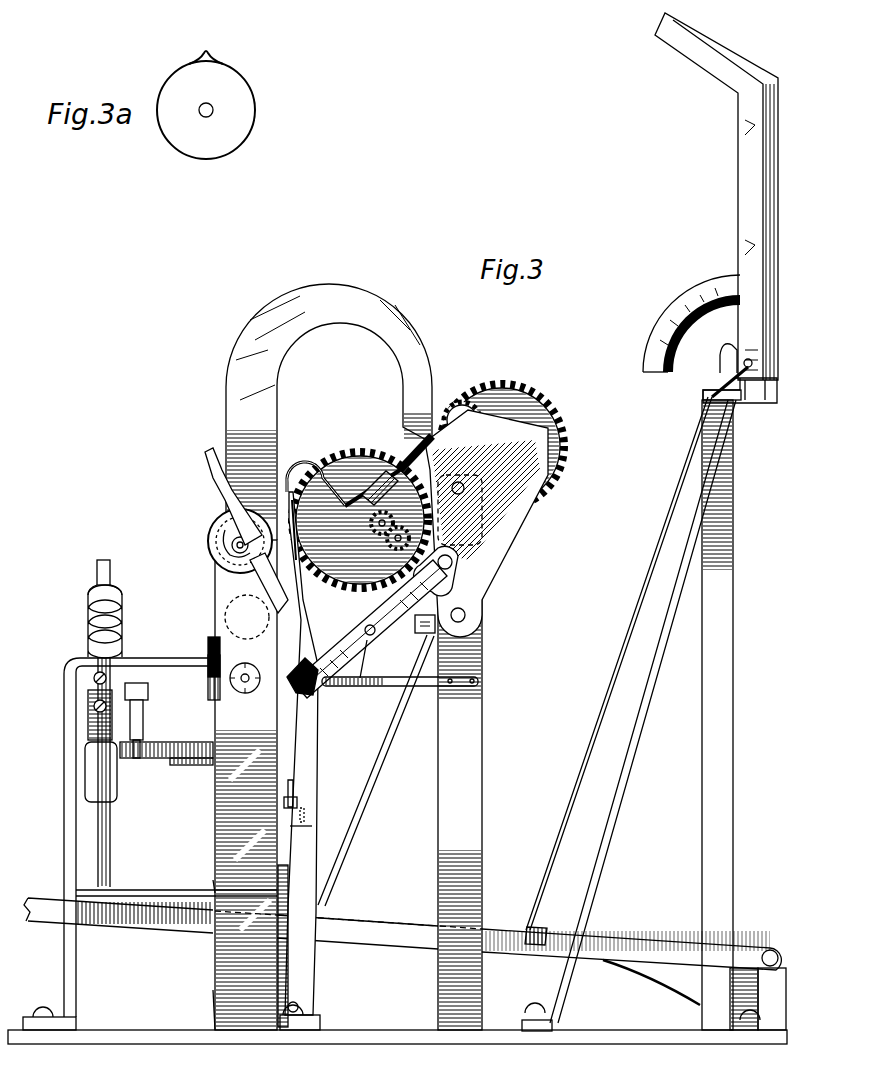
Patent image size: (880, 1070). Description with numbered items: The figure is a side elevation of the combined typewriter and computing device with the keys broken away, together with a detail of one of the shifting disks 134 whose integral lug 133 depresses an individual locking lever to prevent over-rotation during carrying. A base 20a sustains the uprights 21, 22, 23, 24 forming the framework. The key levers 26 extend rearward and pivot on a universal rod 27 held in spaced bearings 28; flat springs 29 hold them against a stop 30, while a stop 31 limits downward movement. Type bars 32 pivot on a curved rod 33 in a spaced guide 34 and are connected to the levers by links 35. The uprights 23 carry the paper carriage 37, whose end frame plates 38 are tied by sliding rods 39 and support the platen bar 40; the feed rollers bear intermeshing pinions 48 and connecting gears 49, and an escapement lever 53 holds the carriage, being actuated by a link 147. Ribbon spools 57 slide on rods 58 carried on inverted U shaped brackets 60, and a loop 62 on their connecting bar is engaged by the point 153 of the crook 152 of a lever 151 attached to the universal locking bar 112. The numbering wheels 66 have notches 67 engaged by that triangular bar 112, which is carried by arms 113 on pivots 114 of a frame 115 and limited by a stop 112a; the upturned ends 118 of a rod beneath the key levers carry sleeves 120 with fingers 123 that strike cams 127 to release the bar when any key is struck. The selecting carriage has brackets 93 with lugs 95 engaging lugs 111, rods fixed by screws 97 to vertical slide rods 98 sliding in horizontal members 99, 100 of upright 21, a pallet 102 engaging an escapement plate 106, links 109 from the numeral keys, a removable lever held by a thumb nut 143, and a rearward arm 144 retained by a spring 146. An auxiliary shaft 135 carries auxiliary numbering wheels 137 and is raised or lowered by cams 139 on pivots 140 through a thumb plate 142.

In FIG. 3A, the lug 133 is at (208, 52).
In FIG. 3A, the shifting disk 134 is at (181, 140).
In FIG. 3, the base 20a is at (150, 1030).
In FIG. 3, the upright 21 is at (64, 795).
In FIG. 3, the uprights 22 is at (230, 785).
In FIG. 3, the uprights 23 is at (470, 825).
In FIG. 3, the uprights 24 is at (706, 742).
In FIG. 3, the key levers 26 is at (390, 916).
In FIG. 3, the universal rod 27 is at (768, 950).
In FIG. 3, the bearings 28 is at (760, 995).
In FIG. 3, the flat springs 29 is at (665, 982).
In FIG. 3, the stop 30 is at (213, 880).
In FIG. 3, the stop 31 is at (197, 1000).
In FIG. 3, the type bars 32 is at (735, 75).
In FIG. 3, the rod 33 is at (744, 363).
In FIG. 3, the guide 34 is at (680, 295).
In FIG. 3, the links 35 is at (660, 582).
In FIG. 3, the paper carriage 37 is at (492, 518).
In FIG. 3, the end frame plates 38 is at (462, 578).
In FIG. 3, the rods 39 is at (460, 494).
In FIG. 3, the flat bar 40 is at (440, 490).
In FIG. 3, the intermeshing pinions 48 is at (470, 415).
In FIG. 3, the gears 49 is at (565, 432).
In FIG. 3, the escapement lever 53 is at (415, 632).
In FIG. 3, the spools 57 is at (392, 510).
In FIG. 3, the rods 58 is at (418, 446).
In FIG. 3, the inverted U shaped brackets 60 is at (333, 323).
In FIG. 3, the loop 62 is at (352, 522).
In FIG. 3, the numbering wheels 66 is at (212, 650).
In FIG. 3, the notches 67 is at (215, 690).
In FIG. 3, the brackets 93 is at (125, 752).
In FIG. 3, the lugs 95 is at (158, 758).
In FIG. 3, the screws 97 is at (90, 700).
In FIG. 3, the vertical slide rods 98 is at (97, 572).
In FIG. 3, the horizontal member 99 is at (170, 658).
In FIG. 3, the horizontal member 100 is at (165, 890).
In FIG. 3, the pallet 102 is at (143, 712).
In FIG. 3, the escapement plate 106 is at (140, 748).
In FIG. 3, the links 109 is at (95, 635).
In FIG. 3, the lugs 111 is at (190, 766).
In FIG. 3, the universal locking bar 112 is at (318, 690).
In FIG. 3, the stop 112a is at (382, 678).
In FIG. 3, the arms 113 is at (300, 770).
In FIG. 3, the pivots 114 is at (300, 1005).
In FIG. 3, the frame 115 is at (320, 990).
In FIG. 3, the vertical ends 118 is at (290, 782).
In FIG. 3, the sleeves 120 is at (312, 826).
In FIG. 3, the fingers 123 is at (300, 795).
In FIG. 3, the cams 127 is at (308, 812).
In FIG. 3, the auxiliary shaft 135 is at (230, 550).
In FIG. 3, the auxiliary numbering wheels 137 is at (212, 530).
In FIG. 3, the cams 139 is at (215, 540).
In FIG. 3, the pivots 140 is at (292, 505).
In FIG. 3, the thumb plate 142 is at (208, 455).
In FIG. 3, the thumb nut 143 is at (150, 682).
In FIG. 3, the arm 144 is at (370, 628).
In FIG. 3, the spring 146 is at (362, 686).
In FIG. 3, the link 147 is at (386, 778).
In FIG. 3, the lever 151 is at (306, 640).
In FIG. 3, the crook 152 is at (306, 480).
In FIG. 3, the point 153 is at (370, 488).